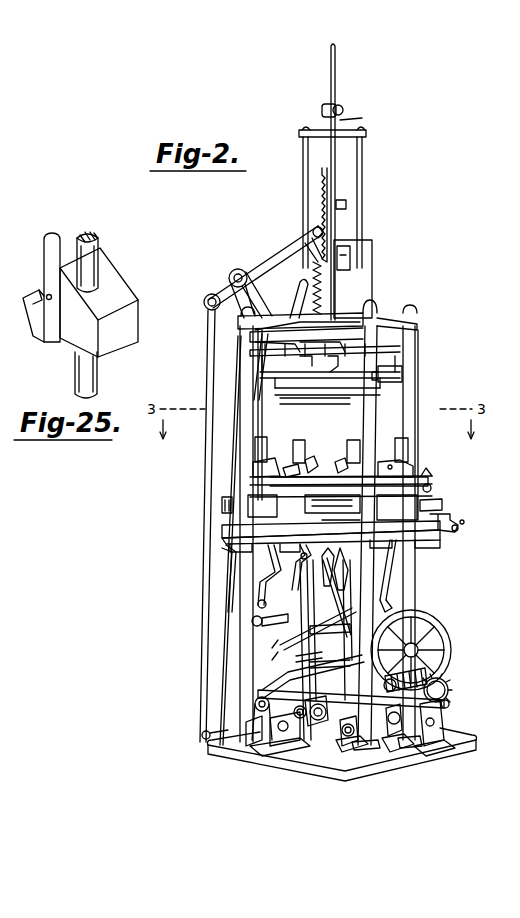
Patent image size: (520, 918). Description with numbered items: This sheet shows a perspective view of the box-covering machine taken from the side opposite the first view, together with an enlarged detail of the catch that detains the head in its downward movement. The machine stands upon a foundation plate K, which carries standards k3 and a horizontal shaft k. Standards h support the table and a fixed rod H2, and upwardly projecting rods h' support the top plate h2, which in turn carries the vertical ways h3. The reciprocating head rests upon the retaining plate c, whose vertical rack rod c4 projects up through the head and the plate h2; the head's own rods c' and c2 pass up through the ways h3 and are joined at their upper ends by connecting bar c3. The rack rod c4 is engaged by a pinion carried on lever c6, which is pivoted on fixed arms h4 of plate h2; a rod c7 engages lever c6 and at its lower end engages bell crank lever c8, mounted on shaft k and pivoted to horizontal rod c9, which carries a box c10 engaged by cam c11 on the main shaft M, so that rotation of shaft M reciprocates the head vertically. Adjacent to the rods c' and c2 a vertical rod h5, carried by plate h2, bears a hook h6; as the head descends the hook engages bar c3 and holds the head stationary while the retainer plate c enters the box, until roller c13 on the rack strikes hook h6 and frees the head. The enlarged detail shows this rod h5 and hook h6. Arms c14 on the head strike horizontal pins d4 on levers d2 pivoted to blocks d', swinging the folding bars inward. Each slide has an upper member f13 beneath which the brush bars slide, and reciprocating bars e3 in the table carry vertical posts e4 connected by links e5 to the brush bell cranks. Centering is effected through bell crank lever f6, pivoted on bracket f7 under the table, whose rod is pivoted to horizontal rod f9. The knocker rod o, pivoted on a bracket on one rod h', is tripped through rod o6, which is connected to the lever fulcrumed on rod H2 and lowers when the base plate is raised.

In FIG. 2, the cam c11 is at (336, 58).
In FIG. 2, the roller c13 is at (342, 106).
In FIG. 25, the vertical rod h5 is at (93, 256).
In FIG. 2, the vertical rod h5 is at (358, 119).
In FIG. 25, the hook h6 is at (42, 323).
In FIG. 2, the connecting bar c3 is at (367, 131).
In FIG. 2, the upwardly projecting rod c' is at (292, 202).
In FIG. 2, the upwardly projecting rod c2 is at (365, 188).
In FIG. 2, the rack rod c4 is at (324, 172).
In FIG. 2, the vertical ways h3 is at (372, 260).
In FIG. 2, the top plate h2 is at (385, 318).
In FIG. 2, the fixed arms h4 is at (236, 273).
In FIG. 2, the lever c6 is at (258, 255).
In FIG. 2, the rod c7 is at (204, 458).
In FIG. 2, the rod o is at (248, 363).
In FIG. 2, the rod o6 is at (218, 570).
In FIG. 2, the upwardly projecting rods h' is at (335, 534).
In FIG. 2, the retaining plate c is at (327, 378).
In FIG. 2, the arms c14 is at (403, 376).
In FIG. 2, the blocks d' is at (333, 450).
In FIG. 2, the levers d2 is at (312, 456).
In FIG. 2, the horizontal pins d4 is at (340, 460).
In FIG. 2, the reciprocating bars e3 is at (430, 535).
In FIG. 2, the upper member f13 is at (432, 484).
In FIG. 2, the link e5 is at (444, 503).
In FIG. 2, the vertical posts e4 is at (460, 513).
In FIG. 2, the bracket f7 is at (400, 600).
In FIG. 2, the bell crank lever f6 is at (292, 570).
In FIG. 2, the standards h is at (327, 538).
In FIG. 2, the fixed rod H2 is at (254, 627).
In FIG. 2, the standards k3 is at (445, 680).
In FIG. 2, the horizontal rod f9 is at (448, 706).
In FIG. 2, the horizontal rod c9 is at (268, 700).
In FIG. 2, the horizontal shaft k is at (285, 742).
In FIG. 2, the box c10 is at (312, 726).
In FIG. 2, the main shaft M is at (348, 750).
In FIG. 2, the bell crank lever c8 is at (212, 728).
In FIG. 2, the foundation plate K is at (250, 756).